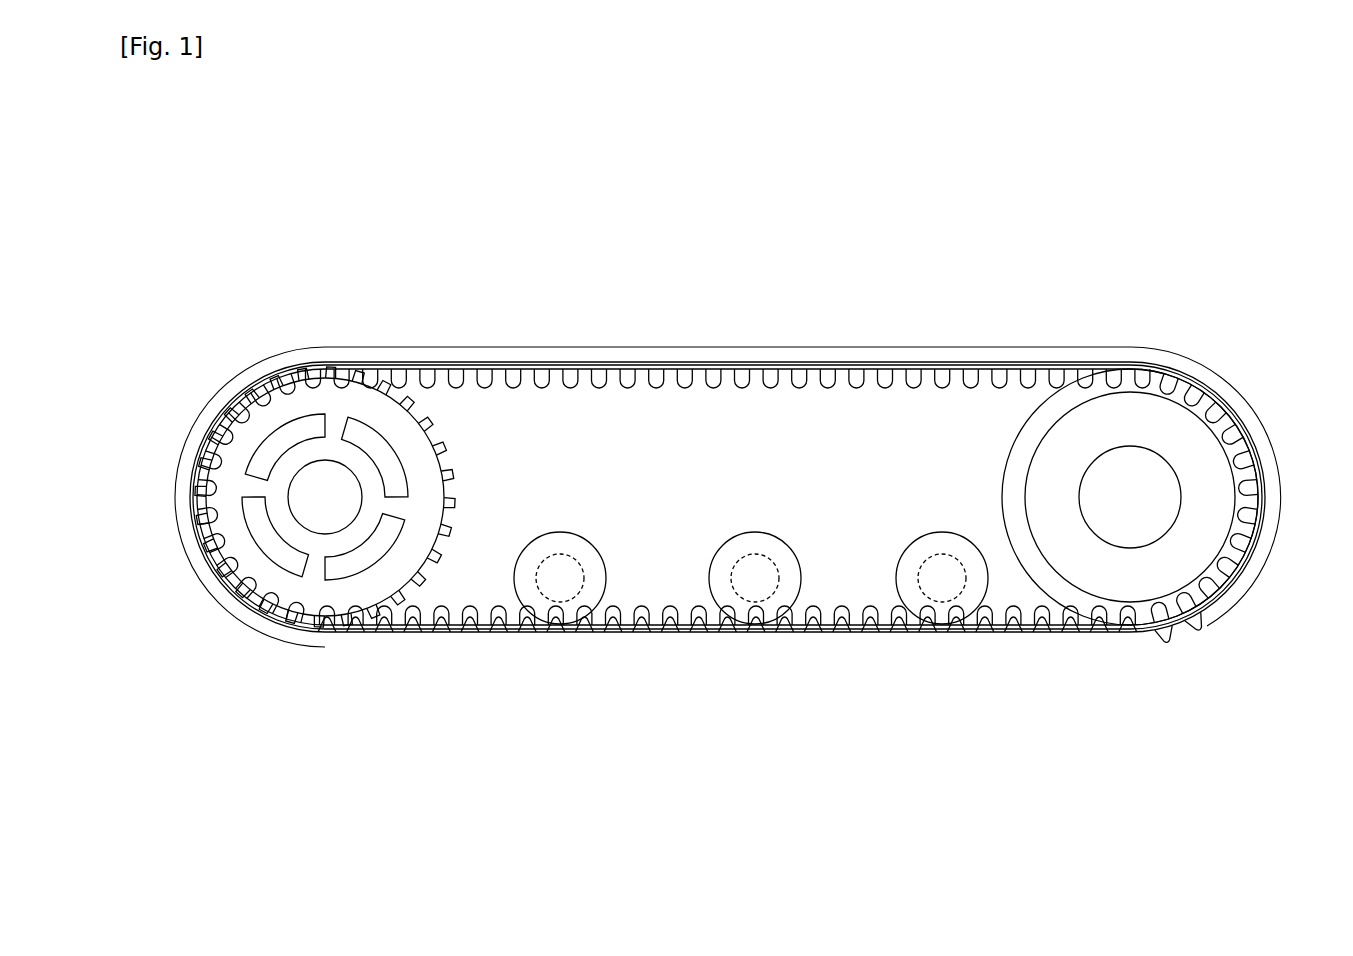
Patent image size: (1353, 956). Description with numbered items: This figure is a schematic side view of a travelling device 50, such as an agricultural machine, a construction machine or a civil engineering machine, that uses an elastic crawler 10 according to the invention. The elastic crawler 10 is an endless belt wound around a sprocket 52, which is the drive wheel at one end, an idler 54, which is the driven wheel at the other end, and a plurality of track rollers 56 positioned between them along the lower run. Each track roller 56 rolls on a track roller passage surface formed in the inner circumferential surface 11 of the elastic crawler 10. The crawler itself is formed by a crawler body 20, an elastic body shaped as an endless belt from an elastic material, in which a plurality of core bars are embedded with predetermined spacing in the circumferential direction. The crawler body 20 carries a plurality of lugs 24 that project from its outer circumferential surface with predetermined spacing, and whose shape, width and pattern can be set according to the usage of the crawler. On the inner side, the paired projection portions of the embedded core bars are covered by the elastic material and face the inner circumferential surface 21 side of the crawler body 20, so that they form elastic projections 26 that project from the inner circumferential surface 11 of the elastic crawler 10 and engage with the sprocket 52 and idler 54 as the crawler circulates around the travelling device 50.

The elastic crawler 10 is at (727, 539).
The inner circumferential surface 11 is at (857, 622).
The crawler body 20 is at (727, 539).
The inner circumferential surface 21 is at (455, 624).
The lugs 24 is at (755, 650).
The elastic projections 26 is at (642, 608).
The travelling device 50 is at (1102, 319).
The sprocket 52 is at (441, 433).
The idler 54 is at (1014, 433).
The track rollers 56 is at (560, 532).